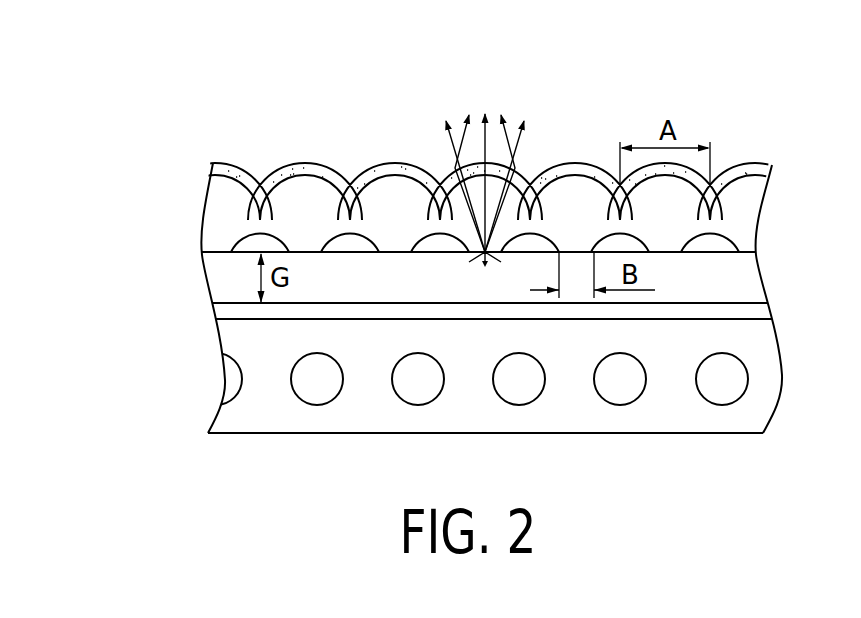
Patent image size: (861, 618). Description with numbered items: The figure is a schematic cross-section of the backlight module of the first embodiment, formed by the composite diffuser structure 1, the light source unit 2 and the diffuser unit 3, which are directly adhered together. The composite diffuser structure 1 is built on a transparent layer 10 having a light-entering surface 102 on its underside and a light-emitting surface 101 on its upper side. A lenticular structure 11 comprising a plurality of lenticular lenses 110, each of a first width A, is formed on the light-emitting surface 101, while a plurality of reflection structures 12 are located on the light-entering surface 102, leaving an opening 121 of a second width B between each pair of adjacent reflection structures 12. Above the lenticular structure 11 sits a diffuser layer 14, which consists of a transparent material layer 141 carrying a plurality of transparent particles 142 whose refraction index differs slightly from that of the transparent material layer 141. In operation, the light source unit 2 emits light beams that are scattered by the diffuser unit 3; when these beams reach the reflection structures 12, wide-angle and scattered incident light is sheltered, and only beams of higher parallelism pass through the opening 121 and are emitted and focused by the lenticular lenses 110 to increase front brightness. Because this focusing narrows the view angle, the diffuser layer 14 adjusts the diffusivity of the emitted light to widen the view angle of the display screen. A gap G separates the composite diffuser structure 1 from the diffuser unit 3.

The composite diffuser structure 1 is at (467, 224).
The transparent layer 10 is at (223, 222).
The lenticular structure 11 is at (463, 117).
The reflection structures 12 is at (233, 247).
The diffuser layer 14 is at (485, 117).
The light-emitting surface 101 is at (740, 187).
The light-entering surface 102 is at (207, 272).
The lenticular lens 110 is at (298, 172).
The opening 121 is at (665, 242).
The transparent material layer 141 is at (340, 58).
The particles 142 is at (383, 165).
The light source unit 2 is at (760, 388).
The diffuser unit 3 is at (752, 312).